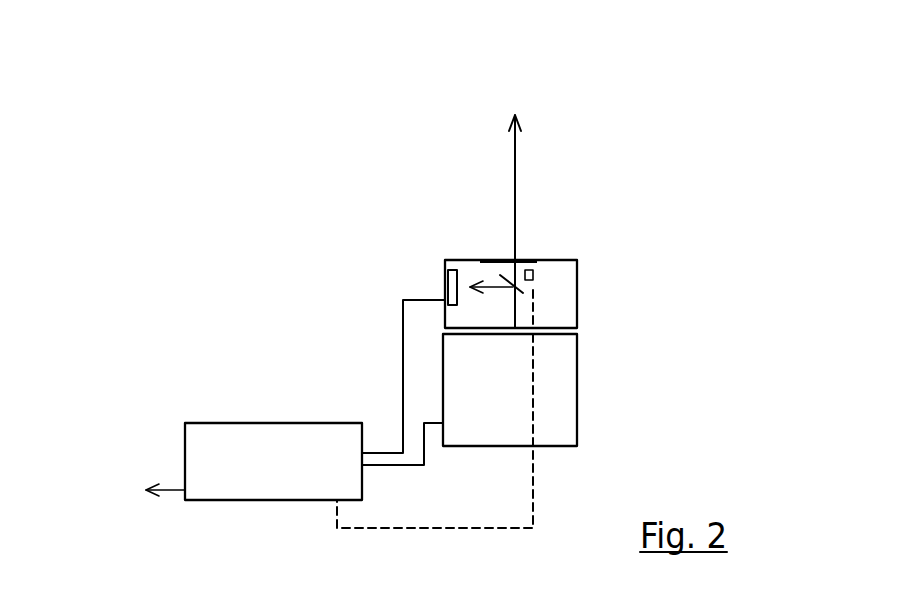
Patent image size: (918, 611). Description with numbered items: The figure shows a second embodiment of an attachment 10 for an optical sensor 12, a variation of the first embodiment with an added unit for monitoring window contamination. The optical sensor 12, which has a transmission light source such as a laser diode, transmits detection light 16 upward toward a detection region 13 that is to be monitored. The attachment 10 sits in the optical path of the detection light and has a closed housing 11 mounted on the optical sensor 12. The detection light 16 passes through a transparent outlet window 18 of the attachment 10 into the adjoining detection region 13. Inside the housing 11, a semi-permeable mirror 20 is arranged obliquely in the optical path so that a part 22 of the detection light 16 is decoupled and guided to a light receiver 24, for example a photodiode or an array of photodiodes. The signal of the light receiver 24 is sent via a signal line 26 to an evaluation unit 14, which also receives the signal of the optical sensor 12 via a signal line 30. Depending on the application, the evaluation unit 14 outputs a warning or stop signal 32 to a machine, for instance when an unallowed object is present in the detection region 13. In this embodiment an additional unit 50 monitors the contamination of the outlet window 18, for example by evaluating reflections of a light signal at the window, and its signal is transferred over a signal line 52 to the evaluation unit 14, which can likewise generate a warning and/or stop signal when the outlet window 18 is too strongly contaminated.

The attachment 10 is at (568, 228).
The closed housing 11 is at (577, 268).
The optical sensor 12 is at (577, 387).
The detection region 13 is at (515, 52).
The evaluation unit 14 is at (273, 499).
The detection light 16 is at (515, 156).
The transparent outlet window 18 is at (500, 259).
The semi-permeable mirror 20 is at (523, 293).
The part of the detection light 22 is at (490, 283).
The light receiver 24 is at (447, 282).
The signal line 26 is at (404, 365).
The signal line 30 is at (403, 557).
The stop signal 32 is at (168, 492).
The unit for monitoring the contamination 50 is at (533, 274).
The signal line 52 is at (533, 499).